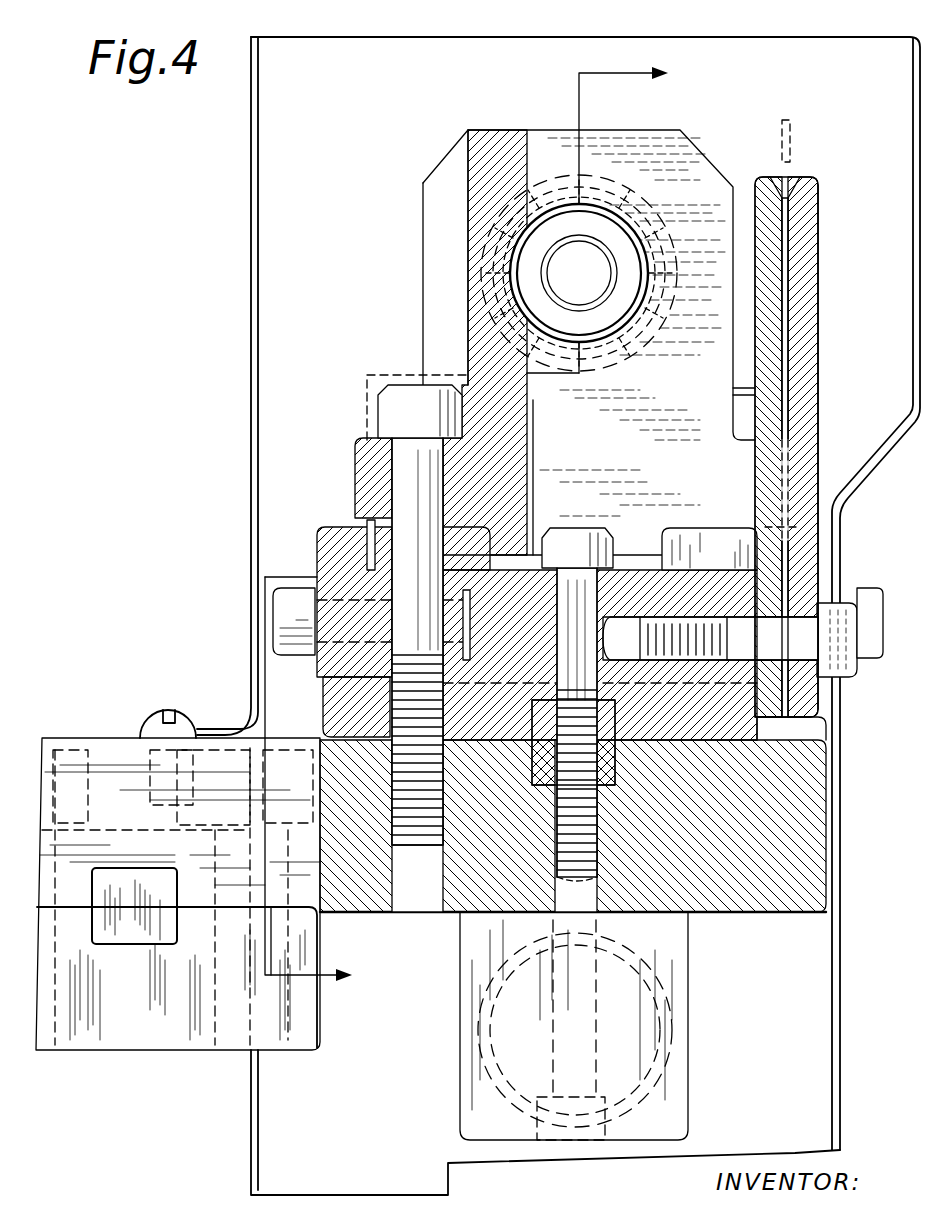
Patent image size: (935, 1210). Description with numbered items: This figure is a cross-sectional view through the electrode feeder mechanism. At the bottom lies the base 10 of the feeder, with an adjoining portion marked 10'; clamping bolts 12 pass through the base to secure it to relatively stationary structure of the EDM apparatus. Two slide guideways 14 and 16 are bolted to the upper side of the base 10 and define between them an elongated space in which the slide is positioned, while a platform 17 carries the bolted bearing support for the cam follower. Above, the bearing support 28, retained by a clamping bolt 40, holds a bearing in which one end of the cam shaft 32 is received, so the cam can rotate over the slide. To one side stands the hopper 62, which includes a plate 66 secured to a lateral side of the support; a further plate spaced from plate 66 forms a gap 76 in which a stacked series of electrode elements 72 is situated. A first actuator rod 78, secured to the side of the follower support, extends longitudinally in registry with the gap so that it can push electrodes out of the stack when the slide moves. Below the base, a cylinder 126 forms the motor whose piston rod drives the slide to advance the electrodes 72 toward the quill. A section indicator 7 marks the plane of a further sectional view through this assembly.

The section line 7- 7 is at (481, 531).
The base 10 is at (604, 826).
The base plate flange 10' is at (826, 729).
The clamping bolt 12 is at (108, 762).
The slide guideway 14 is at (712, 540).
The slide guideway 16 is at (317, 552).
The platform 17 is at (466, 634).
The bearing support 28 is at (700, 158).
The shaft 32 is at (535, 283).
The clamping bolt 40 is at (392, 406).
The hopper 62 is at (832, 345).
The plate 66 is at (803, 262).
The electrode element 72 is at (793, 133).
The gap 76 is at (786, 203).
The first actuator rod 78 is at (368, 522).
The cylinder 126 is at (478, 1046).